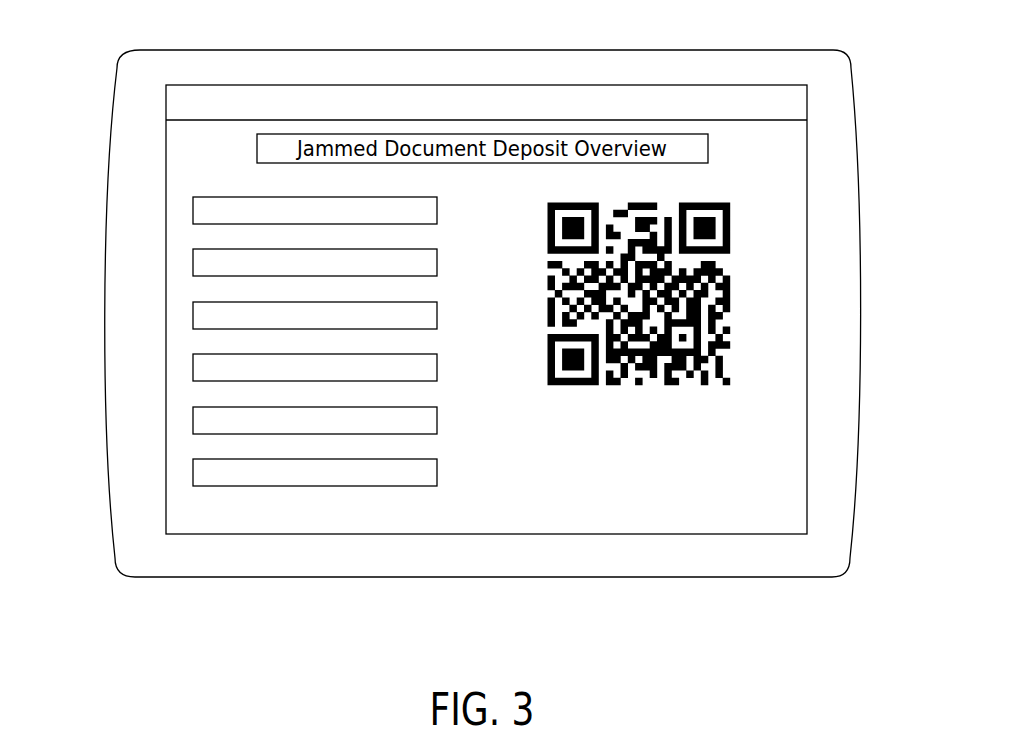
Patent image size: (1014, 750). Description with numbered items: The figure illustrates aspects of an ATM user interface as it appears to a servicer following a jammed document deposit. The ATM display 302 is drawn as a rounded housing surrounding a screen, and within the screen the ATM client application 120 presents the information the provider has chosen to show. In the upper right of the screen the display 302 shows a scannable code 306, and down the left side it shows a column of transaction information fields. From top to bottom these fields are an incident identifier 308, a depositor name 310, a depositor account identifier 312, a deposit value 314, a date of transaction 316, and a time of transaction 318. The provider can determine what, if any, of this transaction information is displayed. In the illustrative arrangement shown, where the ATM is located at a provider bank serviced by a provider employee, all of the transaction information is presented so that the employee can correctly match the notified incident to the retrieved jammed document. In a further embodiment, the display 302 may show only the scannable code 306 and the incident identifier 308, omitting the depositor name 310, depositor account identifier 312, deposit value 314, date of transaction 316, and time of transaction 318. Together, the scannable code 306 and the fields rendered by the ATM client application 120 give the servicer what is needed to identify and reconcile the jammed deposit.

The ATM display 302 is at (200, 54).
The ATM client application 120 is at (200, 85).
The scannable code 306 is at (750, 191).
The incident identifier 308 is at (181, 198).
The depositor name 310 is at (181, 251).
The depositor account identifier 312 is at (181, 304).
The deposit value 314 is at (181, 359).
The date of transaction 316 is at (181, 412).
The time of transaction 318 is at (181, 465).